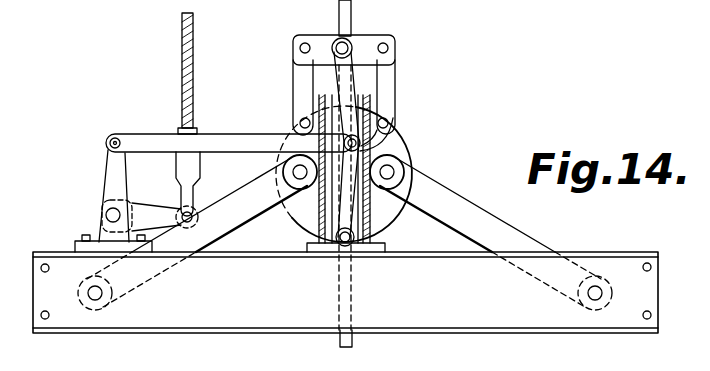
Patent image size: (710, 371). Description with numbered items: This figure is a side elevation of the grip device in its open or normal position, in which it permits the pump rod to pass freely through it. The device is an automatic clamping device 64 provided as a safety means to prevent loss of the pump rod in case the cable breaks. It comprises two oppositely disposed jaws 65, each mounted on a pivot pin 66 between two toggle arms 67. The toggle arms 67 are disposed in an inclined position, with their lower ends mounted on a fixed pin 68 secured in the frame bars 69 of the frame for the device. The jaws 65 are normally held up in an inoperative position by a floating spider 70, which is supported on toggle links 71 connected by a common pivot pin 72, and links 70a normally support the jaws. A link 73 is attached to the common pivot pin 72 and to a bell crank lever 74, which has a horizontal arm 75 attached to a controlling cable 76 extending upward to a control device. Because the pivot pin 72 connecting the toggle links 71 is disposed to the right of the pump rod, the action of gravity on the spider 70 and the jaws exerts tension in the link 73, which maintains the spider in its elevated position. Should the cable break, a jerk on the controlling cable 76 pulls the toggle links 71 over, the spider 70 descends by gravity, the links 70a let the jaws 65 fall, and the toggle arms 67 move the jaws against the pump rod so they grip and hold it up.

The automatic clamping device 64 is at (496, 119).
The jaws 65 is at (291, 130).
The pivot pin 66 is at (392, 172).
The toggle arms 67 is at (470, 212).
The fixed pin 68 is at (597, 300).
The frame bars 69 is at (628, 268).
The floating spider 70 is at (363, 42).
The links 70a is at (303, 86).
The toggle links 71 is at (355, 90).
The common pivot pin 72 is at (390, 140).
The link 73 is at (237, 142).
The bell crank lever 74 is at (115, 175).
The horizontal arm 75 is at (145, 212).
The controlling cable 76 is at (194, 76).